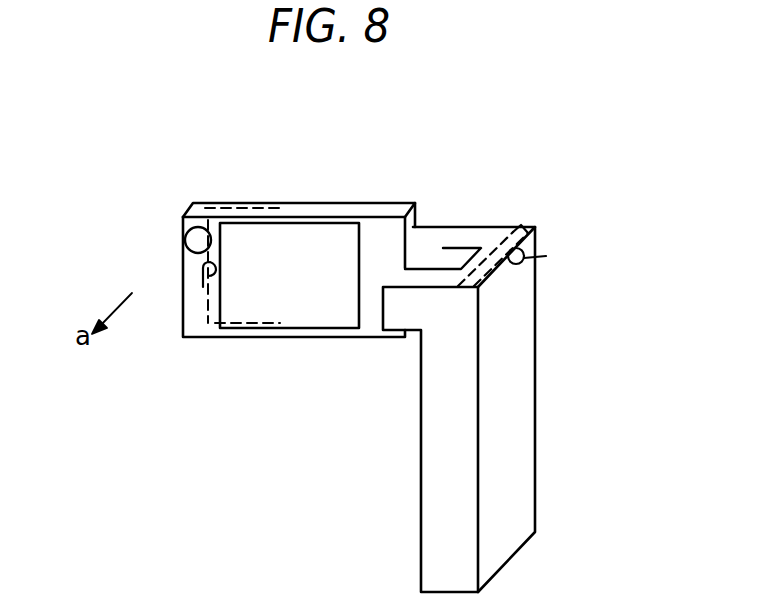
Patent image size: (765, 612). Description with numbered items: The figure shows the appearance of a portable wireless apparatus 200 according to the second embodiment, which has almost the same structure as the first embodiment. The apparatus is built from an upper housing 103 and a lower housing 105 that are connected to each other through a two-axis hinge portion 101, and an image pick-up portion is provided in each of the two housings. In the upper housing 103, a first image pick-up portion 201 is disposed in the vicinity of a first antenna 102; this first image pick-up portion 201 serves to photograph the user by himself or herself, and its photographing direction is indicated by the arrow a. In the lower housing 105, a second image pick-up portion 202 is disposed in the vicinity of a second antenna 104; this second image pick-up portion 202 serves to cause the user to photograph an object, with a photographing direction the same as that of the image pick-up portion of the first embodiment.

The portable wireless apparatus 200 is at (349, 134).
The upper housing 103 is at (300, 203).
The first image pick-up portion 201 is at (186, 234).
The first antenna 102 is at (212, 320).
The two-axis hinge portion 101 is at (445, 257).
The second antenna 104 is at (490, 240).
The second image pick-up portion 202 is at (548, 256).
The lower housing 105 is at (507, 410).